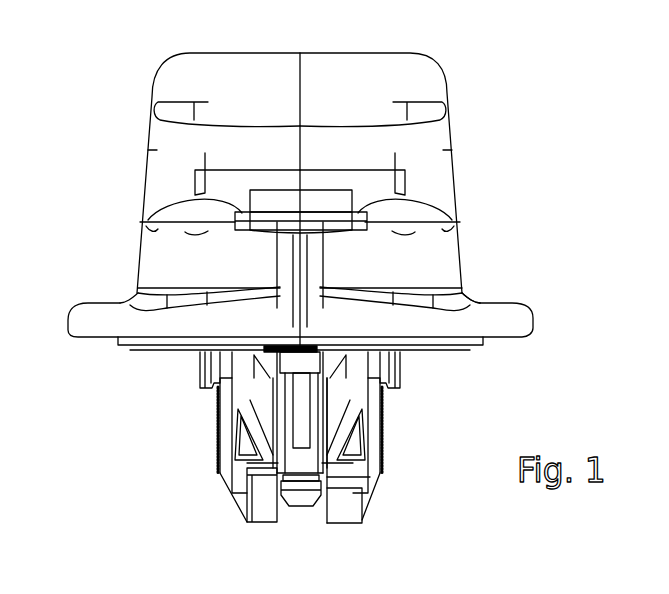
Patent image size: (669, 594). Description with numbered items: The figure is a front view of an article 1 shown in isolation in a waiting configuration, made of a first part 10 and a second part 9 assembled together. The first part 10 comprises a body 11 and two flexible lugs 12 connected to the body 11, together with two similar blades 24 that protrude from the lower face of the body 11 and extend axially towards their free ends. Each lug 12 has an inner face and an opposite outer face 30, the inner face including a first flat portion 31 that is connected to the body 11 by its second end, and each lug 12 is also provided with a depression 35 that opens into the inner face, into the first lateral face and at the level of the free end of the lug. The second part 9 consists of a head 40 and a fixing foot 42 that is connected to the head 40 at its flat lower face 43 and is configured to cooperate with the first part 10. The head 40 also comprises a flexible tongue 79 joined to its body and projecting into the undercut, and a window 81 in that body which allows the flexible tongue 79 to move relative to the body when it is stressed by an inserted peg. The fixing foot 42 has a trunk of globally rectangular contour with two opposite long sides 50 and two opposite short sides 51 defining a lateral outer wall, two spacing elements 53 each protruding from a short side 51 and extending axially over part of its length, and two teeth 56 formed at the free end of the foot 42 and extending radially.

The article 1 is at (537, 90).
The second part 9 is at (528, 149).
The first part 10 is at (472, 424).
The body 11 is at (123, 343).
The flexible lug 12 is at (228, 427).
The blade 24 is at (207, 369).
The outer face 30 is at (218, 473).
The first flat portion 31 is at (257, 398).
The depression 35 is at (262, 510).
The head 40 is at (427, 62).
The fixing foot 42 is at (335, 405).
The flat lower face 43 is at (73, 340).
The long side 50 is at (323, 468).
The short side 51 is at (283, 461).
The spacing element 53 is at (322, 467).
The tooth 56 is at (308, 499).
The flexible tongue 79 is at (337, 193).
The window 81 is at (132, 217).